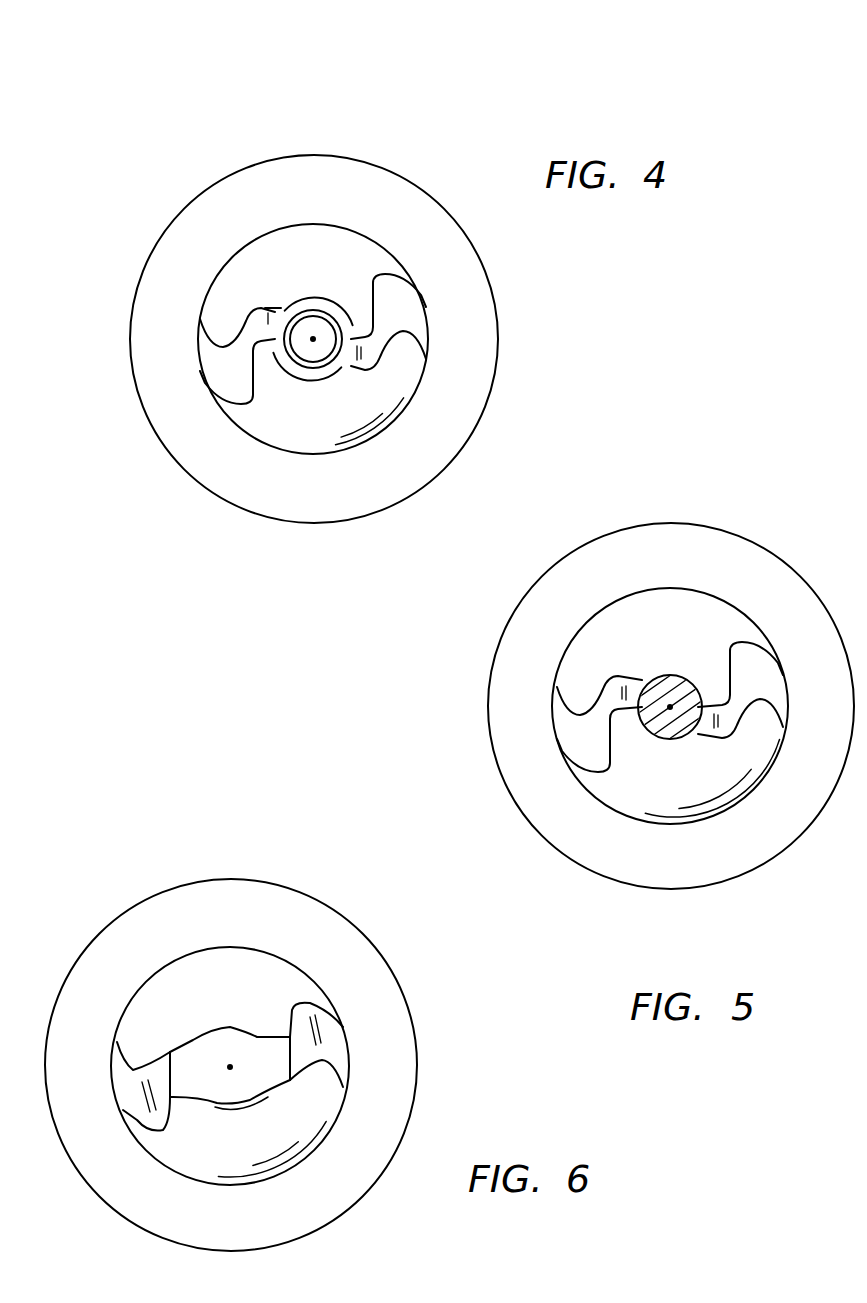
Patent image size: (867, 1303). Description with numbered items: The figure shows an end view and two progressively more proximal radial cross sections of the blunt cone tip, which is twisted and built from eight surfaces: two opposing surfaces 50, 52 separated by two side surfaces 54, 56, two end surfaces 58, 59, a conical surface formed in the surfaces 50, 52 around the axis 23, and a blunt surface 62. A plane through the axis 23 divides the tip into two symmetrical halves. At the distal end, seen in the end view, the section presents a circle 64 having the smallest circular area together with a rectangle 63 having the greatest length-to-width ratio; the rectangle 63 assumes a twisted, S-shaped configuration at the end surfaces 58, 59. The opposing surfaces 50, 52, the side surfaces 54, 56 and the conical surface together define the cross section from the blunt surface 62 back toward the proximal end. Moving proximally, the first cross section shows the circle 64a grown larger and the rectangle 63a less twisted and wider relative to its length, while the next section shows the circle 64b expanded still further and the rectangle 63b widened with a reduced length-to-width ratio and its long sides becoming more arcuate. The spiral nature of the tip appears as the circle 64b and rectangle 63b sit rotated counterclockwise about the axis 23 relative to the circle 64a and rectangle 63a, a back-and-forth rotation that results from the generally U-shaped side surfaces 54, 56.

In FIG. 4, the axis 23 is at (313, 339).
In FIG. 5, the axis 23 is at (672, 705).
In FIG. 6, the axis 23 is at (230, 1067).
In FIG. 4, the opposing surface 50 is at (303, 257).
In FIG. 4, the opposing surface 52 is at (357, 423).
In FIG. 4, the side surface 54 is at (207, 353).
In FIG. 4, the side surface 56 is at (417, 325).
In FIG. 4, the end surface 58 is at (263, 315).
In FIG. 4, the end surface 59 is at (362, 363).
In FIG. 4, the blunt surface 62 is at (305, 350).
In FIG. 4, the rectangle 63 is at (323, 375).
In FIG. 4, the circle 64 is at (300, 317).
In FIG. 5, the rectangle 63a is at (693, 740).
In FIG. 5, the circle 64a is at (655, 737).
In FIG. 6, the rectangle 63b is at (262, 1035).
In FIG. 6, the circle 64b is at (213, 1027).